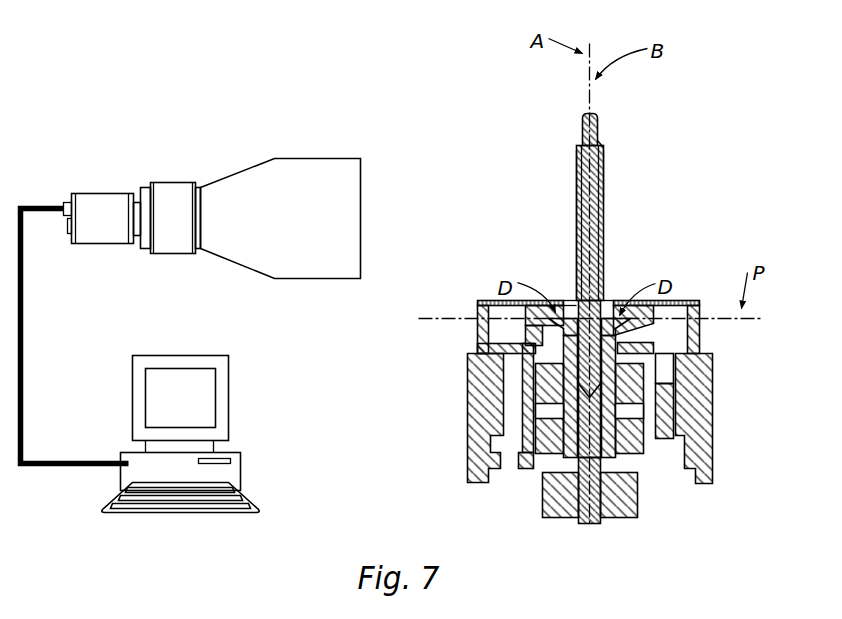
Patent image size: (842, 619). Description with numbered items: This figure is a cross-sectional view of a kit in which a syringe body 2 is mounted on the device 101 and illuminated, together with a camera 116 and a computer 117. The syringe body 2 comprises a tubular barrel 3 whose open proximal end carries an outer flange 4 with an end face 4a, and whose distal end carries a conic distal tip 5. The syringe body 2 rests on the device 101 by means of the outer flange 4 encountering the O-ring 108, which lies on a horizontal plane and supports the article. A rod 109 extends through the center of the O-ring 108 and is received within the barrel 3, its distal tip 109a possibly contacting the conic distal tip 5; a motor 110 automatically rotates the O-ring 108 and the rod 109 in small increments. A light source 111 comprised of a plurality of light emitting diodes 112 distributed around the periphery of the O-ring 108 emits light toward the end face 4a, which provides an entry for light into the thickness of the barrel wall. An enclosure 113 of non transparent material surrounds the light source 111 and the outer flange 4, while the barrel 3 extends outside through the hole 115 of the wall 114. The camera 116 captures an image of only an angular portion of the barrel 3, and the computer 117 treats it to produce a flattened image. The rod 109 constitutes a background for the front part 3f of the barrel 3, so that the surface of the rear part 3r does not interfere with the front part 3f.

The device 101 is at (469, 56).
The camera 116 is at (114, 188).
The computer 117 is at (119, 470).
The syringe body 2 is at (592, 335).
The conic distal tip 5 is at (581, 121).
The distal tip 109a is at (600, 141).
The front part 3f is at (574, 171).
The barrel 3 is at (573, 196).
The rear part 3r is at (603, 199).
The rod 109 is at (580, 236).
The hole 115 is at (607, 299).
The outer flange 4 is at (572, 299).
The end face 4a is at (566, 300).
The wall 114 is at (487, 294).
The light emitting diodes 112 is at (515, 313).
The light source 111 is at (523, 336).
The O-ring 108 is at (656, 324).
The enclosure 113 is at (707, 330).
The motor 110 is at (613, 518).